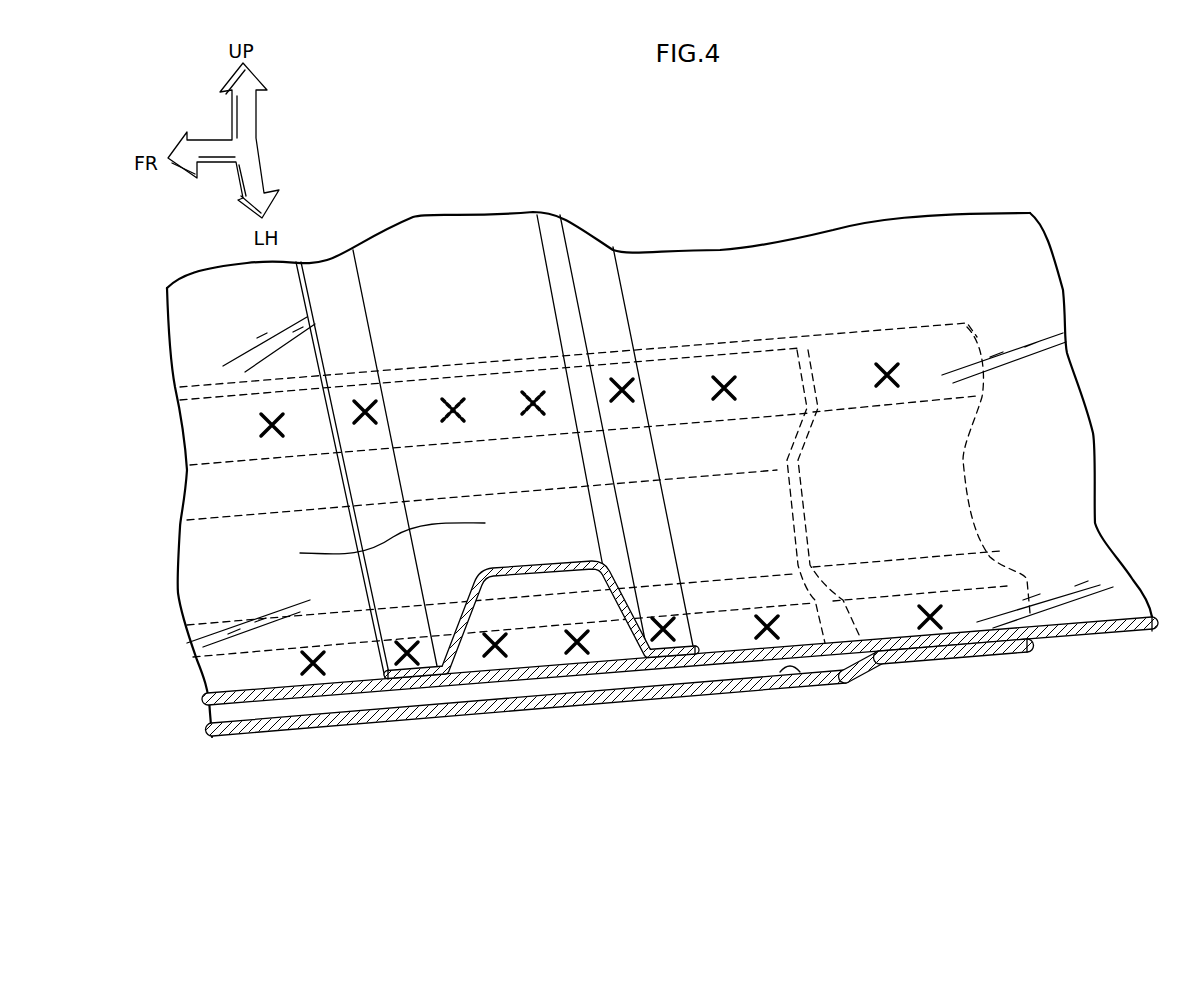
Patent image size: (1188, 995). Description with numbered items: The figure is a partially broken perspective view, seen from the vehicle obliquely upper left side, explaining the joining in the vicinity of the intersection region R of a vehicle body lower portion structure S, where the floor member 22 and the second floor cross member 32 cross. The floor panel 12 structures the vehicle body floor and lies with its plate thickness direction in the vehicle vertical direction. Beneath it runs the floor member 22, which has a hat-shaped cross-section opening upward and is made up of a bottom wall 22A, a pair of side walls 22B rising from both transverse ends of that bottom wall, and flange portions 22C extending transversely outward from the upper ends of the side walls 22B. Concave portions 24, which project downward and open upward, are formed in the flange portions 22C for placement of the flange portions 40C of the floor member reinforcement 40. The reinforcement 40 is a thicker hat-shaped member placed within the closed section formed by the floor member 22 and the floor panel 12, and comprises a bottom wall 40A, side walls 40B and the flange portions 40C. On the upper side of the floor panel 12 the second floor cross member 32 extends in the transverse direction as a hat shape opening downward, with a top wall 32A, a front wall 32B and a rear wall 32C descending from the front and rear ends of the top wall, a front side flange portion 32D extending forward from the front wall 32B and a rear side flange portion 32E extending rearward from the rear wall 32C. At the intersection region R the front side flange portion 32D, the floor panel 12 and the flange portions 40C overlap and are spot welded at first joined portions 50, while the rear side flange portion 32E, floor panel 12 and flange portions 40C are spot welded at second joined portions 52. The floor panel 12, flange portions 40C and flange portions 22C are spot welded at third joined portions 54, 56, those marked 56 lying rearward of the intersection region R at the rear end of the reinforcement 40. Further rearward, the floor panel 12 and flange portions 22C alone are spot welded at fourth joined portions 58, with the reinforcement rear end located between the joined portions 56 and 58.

The floor panel 12 is at (1028, 255).
The floor member 22 is at (676, 502).
The bottom wall 22A is at (950, 495).
The side walls 22B is at (950, 420).
The flange portions 22C is at (967, 330).
The concave portions 24 is at (793, 672).
The second floor cross member 32 is at (494, 410).
The top wall 32A is at (478, 247).
The front wall 32B is at (377, 257).
The rear wall 32C is at (545, 223).
The front side flange portion 32D is at (327, 277).
The rear side flange portion 32E is at (588, 252).
The floor member reinforcement 40 is at (593, 466).
The bottom wall 40A is at (773, 522).
The side walls 40B is at (763, 437).
The flange portions 40C is at (670, 385).
The first joined portions 50 is at (365, 402).
The second joined portions 52 is at (620, 380).
The third joined portions 54 is at (272, 419).
The third joined portions 56 is at (725, 380).
The fourth joined portions 58 is at (885, 372).
The vehicle body lower portion structure S is at (798, 177).
The intersection region R is at (382, 545).